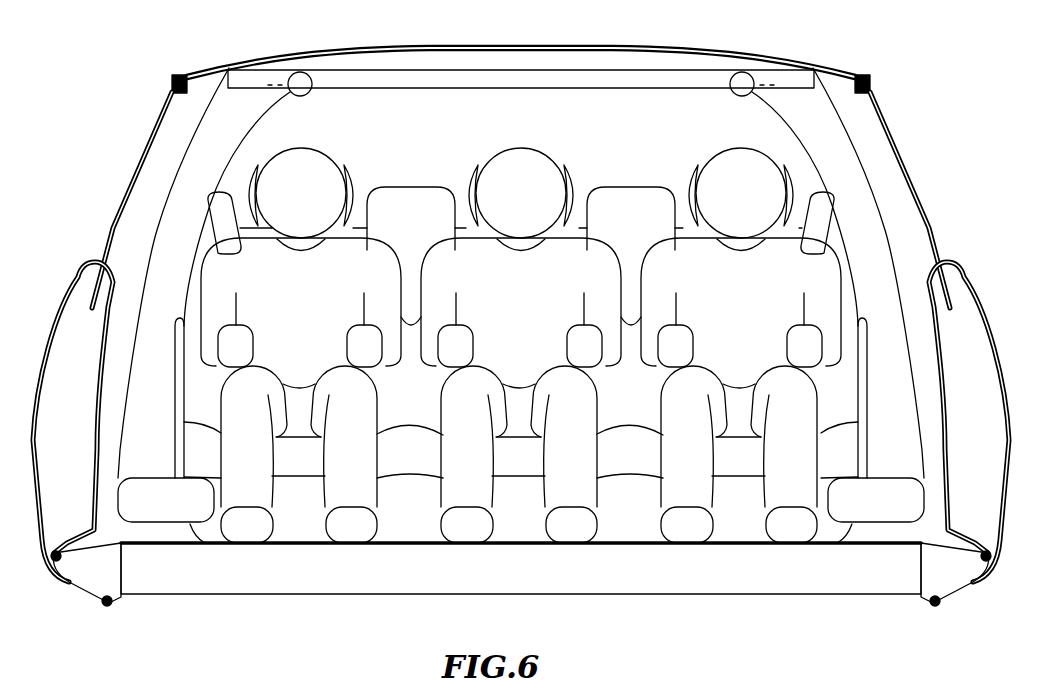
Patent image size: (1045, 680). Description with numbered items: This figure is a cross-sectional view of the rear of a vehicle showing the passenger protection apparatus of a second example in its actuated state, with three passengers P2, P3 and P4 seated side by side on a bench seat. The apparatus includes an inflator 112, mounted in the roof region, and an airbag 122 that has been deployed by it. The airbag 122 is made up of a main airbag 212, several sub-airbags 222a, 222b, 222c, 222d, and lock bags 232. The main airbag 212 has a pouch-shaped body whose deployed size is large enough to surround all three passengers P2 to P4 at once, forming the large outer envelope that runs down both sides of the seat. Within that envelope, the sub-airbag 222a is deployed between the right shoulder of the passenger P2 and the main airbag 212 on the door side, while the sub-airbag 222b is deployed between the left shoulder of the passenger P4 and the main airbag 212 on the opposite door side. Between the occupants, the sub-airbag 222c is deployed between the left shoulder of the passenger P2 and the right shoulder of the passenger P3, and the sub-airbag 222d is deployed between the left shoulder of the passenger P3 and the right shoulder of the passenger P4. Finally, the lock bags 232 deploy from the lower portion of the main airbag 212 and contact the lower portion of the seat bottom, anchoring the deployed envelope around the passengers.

The inflator 112 is at (308, 72).
The airbag 122 is at (178, 228).
The main airbag 212 is at (882, 338).
The sub-airbag 222a is at (207, 247).
The sub-airbag 222b is at (833, 248).
The sub-airbag 222c is at (411, 202).
The sub-airbag 222d is at (632, 202).
The lock bag 232 is at (843, 505).
The passenger P2 is at (331, 168).
The passenger P3 is at (553, 168).
The passenger P4 is at (772, 168).